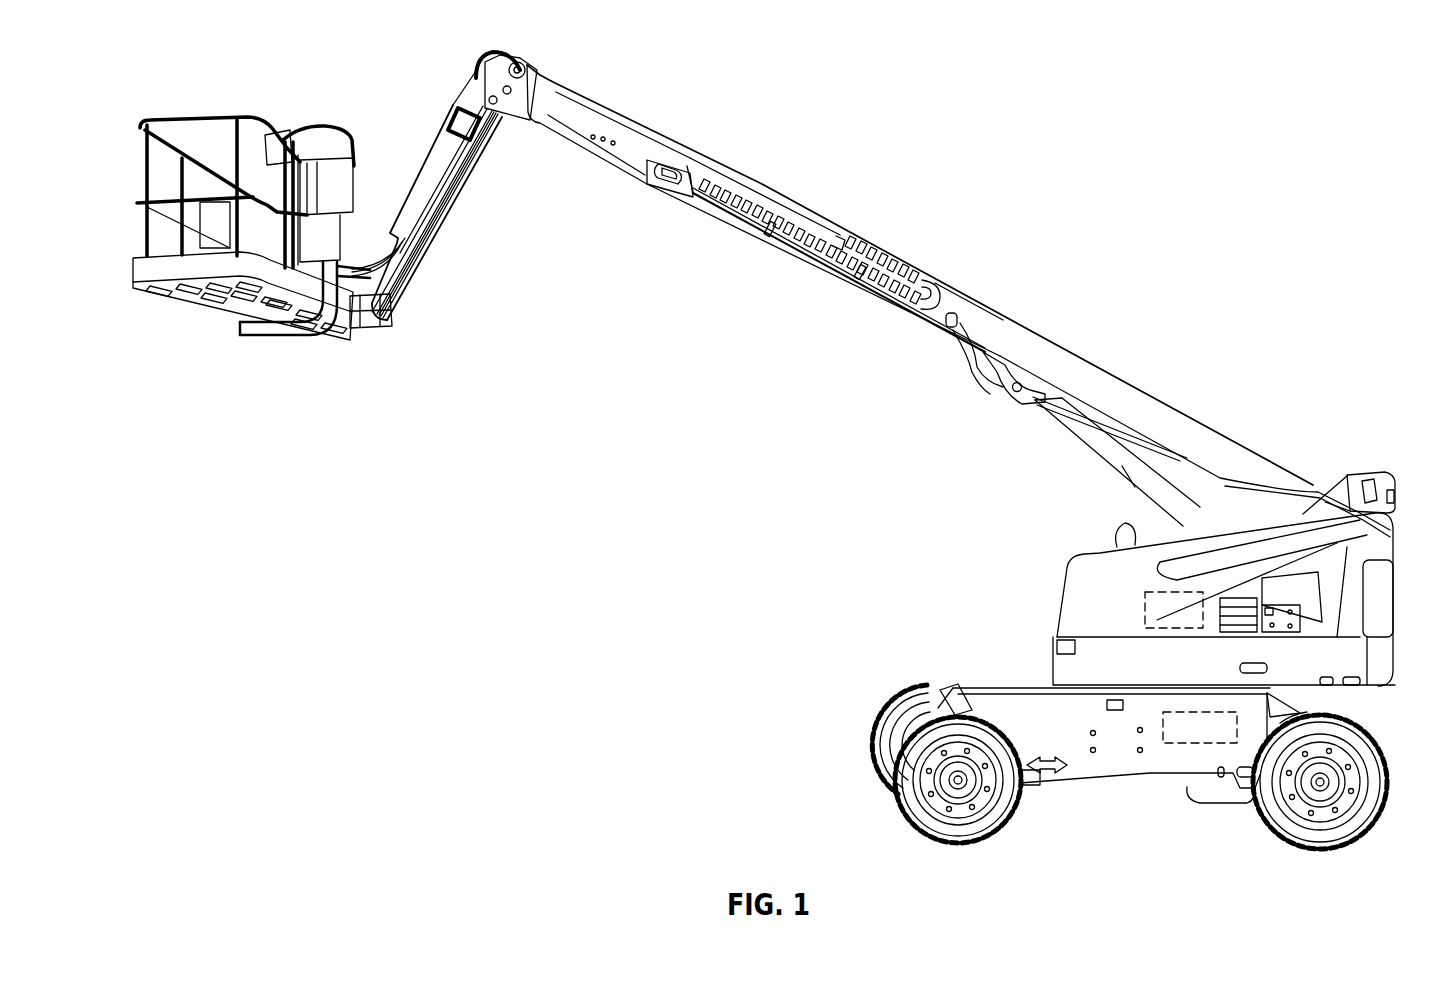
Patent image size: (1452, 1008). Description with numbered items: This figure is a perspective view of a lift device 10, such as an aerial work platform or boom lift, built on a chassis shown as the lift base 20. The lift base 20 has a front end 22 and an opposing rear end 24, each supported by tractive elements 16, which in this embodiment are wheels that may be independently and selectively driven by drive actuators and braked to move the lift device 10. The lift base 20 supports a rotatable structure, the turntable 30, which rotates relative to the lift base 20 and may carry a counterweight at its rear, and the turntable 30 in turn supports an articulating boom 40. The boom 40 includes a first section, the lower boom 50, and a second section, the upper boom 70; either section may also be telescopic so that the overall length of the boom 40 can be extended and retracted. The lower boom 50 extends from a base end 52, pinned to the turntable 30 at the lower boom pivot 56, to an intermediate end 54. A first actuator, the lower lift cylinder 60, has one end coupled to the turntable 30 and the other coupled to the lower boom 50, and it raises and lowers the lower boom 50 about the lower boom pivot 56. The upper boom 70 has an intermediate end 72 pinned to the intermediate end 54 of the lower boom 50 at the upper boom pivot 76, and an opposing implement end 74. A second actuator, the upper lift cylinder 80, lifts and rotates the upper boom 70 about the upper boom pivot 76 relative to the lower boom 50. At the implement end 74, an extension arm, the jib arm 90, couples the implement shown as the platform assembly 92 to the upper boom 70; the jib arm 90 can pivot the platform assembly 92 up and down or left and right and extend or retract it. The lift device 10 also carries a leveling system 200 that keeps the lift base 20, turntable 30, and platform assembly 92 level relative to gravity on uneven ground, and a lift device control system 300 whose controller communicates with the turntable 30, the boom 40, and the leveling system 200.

The lift device 10 is at (1128, 82).
The tractive elements 16 is at (897, 793).
The lift base 20 is at (1113, 765).
The front end 22 is at (888, 680).
The rear end 24 is at (1375, 720).
The turntable 30 is at (1382, 578).
The boom 40 is at (703, 88).
The lower boom 50 is at (775, 292).
The base end 52 is at (1308, 435).
The intermediate end 54 is at (563, 78).
The lower boom pivot 56 is at (1352, 480).
The lower lift cylinder 60 is at (1137, 487).
The upper boom 70 is at (447, 112).
The intermediate end 72 is at (497, 42).
The implement end 74 is at (375, 228).
The upper boom pivot 76 is at (512, 65).
The upper lift cylinder 80 is at (472, 172).
The jib arm 90 is at (360, 322).
The platform assembly 92 is at (143, 131).
The leveling system 200 is at (1197, 737).
The lift device control system 300 is at (1153, 607).